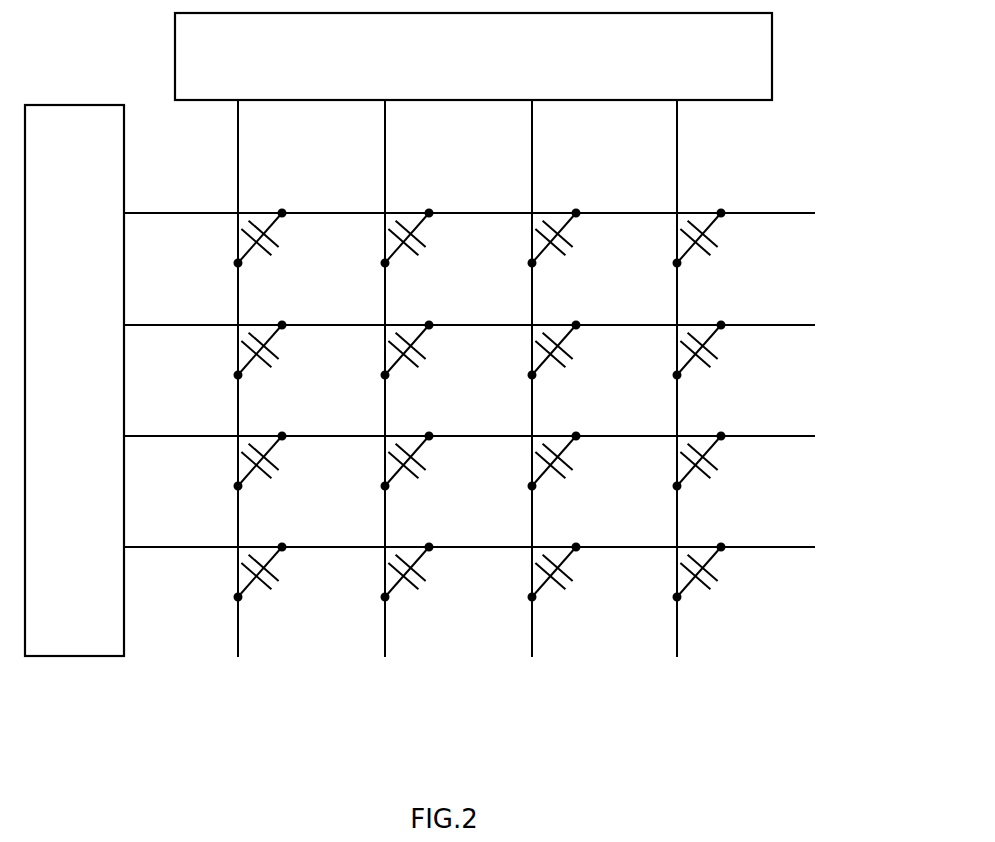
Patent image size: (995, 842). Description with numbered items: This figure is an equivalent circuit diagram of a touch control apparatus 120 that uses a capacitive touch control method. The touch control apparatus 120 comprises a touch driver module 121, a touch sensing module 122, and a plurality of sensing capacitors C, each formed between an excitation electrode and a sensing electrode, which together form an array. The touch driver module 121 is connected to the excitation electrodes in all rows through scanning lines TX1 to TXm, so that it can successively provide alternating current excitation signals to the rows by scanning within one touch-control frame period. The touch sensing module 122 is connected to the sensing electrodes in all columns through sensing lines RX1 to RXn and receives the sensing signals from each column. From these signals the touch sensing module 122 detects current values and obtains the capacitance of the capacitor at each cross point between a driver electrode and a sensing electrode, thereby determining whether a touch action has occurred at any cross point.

The touch control apparatus 120 is at (757, 690).
The touch driver module 121 is at (107, 391).
The touch sensing module 122 is at (486, 86).